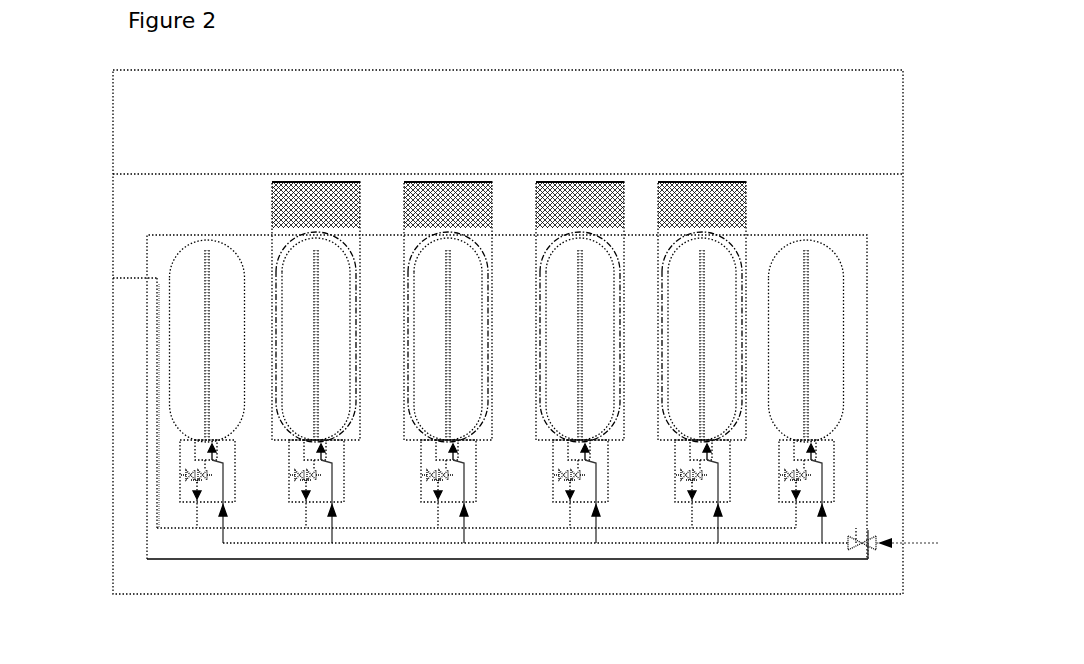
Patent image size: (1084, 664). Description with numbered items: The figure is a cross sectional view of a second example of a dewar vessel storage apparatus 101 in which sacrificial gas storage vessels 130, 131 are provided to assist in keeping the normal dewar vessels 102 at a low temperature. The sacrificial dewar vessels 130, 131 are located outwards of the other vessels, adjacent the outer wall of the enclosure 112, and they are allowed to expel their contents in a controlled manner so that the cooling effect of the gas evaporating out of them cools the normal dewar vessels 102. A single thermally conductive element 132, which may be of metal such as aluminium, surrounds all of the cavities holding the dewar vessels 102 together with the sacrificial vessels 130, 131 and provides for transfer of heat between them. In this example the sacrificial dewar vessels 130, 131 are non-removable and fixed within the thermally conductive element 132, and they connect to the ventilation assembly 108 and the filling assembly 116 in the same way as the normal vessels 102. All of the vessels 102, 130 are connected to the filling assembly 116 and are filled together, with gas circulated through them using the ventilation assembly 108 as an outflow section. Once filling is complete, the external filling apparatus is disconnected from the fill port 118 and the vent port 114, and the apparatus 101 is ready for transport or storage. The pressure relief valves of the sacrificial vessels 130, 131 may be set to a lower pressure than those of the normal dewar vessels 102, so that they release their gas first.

The dewar vessel storage apparatus 101 is at (96, 116).
The dewar vessel 102 is at (400, 373).
The ventilation assembly 108 is at (168, 536).
The enclosure 112 is at (885, 106).
The vent port 114 is at (100, 280).
The filling assembly 116 is at (800, 543).
The fill port 118 is at (908, 543).
The sacrificial gas storage vessel 130 is at (185, 266).
The sacrificial gas storage vessel 131 is at (845, 286).
The thermally conductive element 132 is at (855, 247).